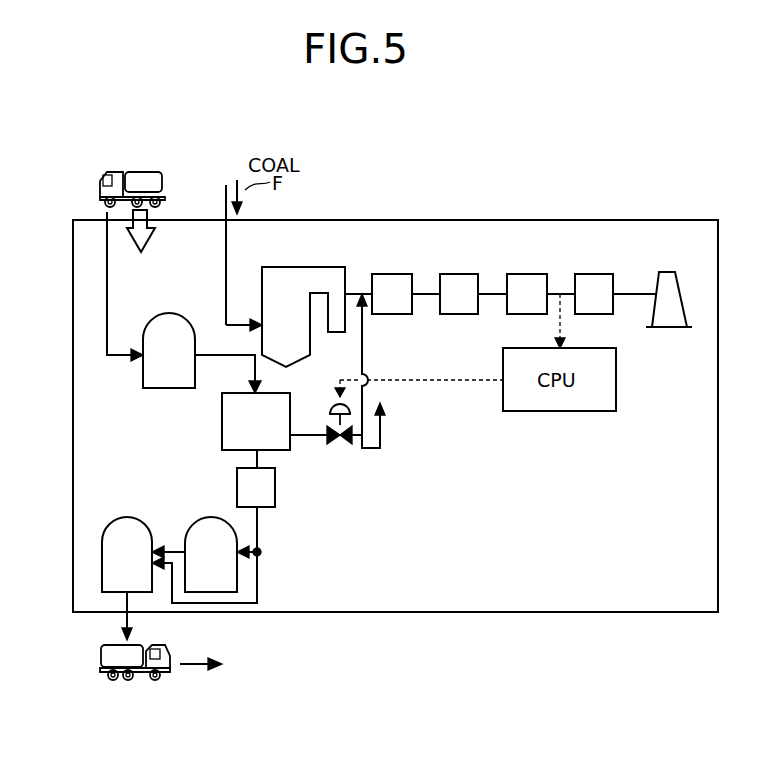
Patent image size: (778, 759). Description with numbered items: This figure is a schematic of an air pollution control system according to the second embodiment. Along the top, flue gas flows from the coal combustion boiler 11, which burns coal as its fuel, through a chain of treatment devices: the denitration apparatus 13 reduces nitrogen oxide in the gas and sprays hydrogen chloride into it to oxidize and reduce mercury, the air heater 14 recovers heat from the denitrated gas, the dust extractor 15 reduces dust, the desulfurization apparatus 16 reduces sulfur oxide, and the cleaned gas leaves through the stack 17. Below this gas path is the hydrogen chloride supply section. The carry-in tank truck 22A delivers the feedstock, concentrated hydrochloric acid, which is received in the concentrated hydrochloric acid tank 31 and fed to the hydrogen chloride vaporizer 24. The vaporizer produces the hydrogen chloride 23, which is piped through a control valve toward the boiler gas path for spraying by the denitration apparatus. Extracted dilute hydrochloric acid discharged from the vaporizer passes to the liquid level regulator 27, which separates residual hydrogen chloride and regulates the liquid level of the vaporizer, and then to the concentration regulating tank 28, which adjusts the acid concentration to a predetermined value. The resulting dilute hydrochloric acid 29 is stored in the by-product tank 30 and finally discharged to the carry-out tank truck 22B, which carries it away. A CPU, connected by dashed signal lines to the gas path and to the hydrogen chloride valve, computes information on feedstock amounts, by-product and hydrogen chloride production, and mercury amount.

The coal combustion boiler 11 is at (333, 267).
The denitration apparatus 13 is at (388, 274).
The air heater 14 is at (459, 274).
The dust extractor 15 is at (525, 274).
The desulfurization apparatus 16 is at (593, 274).
The stack 17 is at (667, 272).
The carry-in tank truck 22A is at (113, 172).
The carry-out tank truck 22B is at (118, 680).
The hydrogen chloride 23 is at (382, 432).
The hydrogen chloride vaporizer 24 is at (222, 420).
The liquid level regulator 27 is at (275, 487).
The concentration regulating tank 28 is at (237, 580).
The dilute hydrochloric acid 29 is at (125, 625).
The by-product tank 30 is at (102, 563).
The concentrated hydrochloric acid tank 31 is at (143, 375).